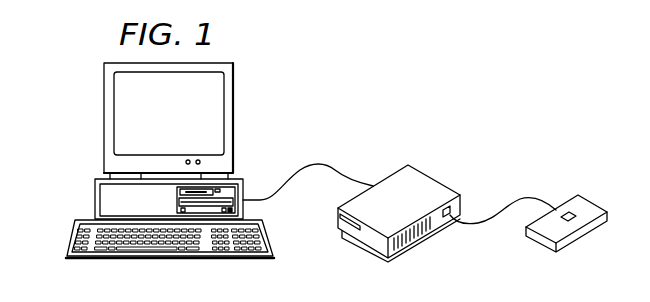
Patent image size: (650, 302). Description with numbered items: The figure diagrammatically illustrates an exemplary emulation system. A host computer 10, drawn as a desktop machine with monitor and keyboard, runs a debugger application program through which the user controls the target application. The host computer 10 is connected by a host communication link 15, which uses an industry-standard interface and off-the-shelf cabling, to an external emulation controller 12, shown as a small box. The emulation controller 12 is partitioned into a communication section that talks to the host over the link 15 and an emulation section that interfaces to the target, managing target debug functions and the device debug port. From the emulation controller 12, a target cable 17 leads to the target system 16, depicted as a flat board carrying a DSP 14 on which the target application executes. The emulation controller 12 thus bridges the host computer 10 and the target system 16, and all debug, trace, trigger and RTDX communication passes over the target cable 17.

The host computer 10 is at (87, 101).
The emulation controller 12 is at (433, 170).
The DSP 14 is at (571, 215).
The host communication link 15 is at (318, 163).
The target system 16 is at (546, 225).
The target cable 17 is at (522, 196).